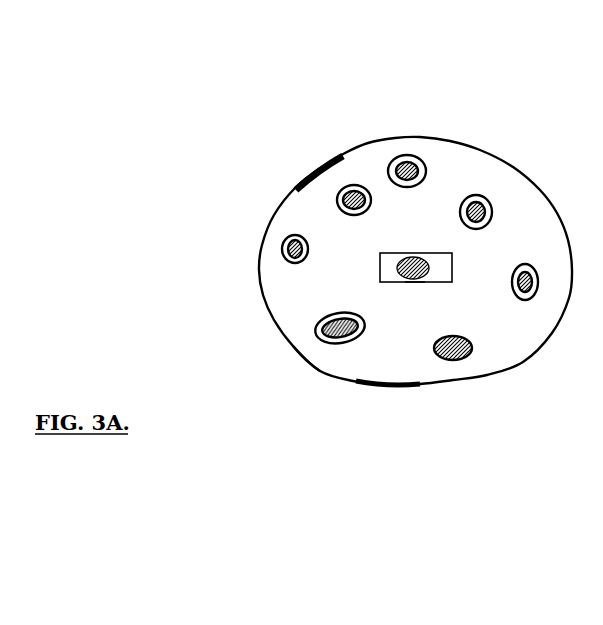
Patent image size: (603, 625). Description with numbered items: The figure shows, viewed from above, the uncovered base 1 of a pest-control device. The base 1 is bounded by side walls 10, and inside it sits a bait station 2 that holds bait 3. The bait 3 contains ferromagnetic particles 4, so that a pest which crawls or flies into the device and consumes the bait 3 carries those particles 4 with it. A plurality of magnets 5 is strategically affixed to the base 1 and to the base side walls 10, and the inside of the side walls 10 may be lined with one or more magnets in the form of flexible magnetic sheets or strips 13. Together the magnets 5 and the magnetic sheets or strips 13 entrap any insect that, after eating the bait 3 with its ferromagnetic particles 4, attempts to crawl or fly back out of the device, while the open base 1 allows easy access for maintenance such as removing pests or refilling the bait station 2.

The base 1 is at (279, 296).
The bait station 2 is at (366, 262).
The bait 3 is at (418, 288).
The ferromagnetic particles 4 is at (402, 261).
The magnets 5 is at (475, 336).
The side walls 10 is at (299, 361).
The flexible magnetic sheets or strips 13 is at (289, 152).